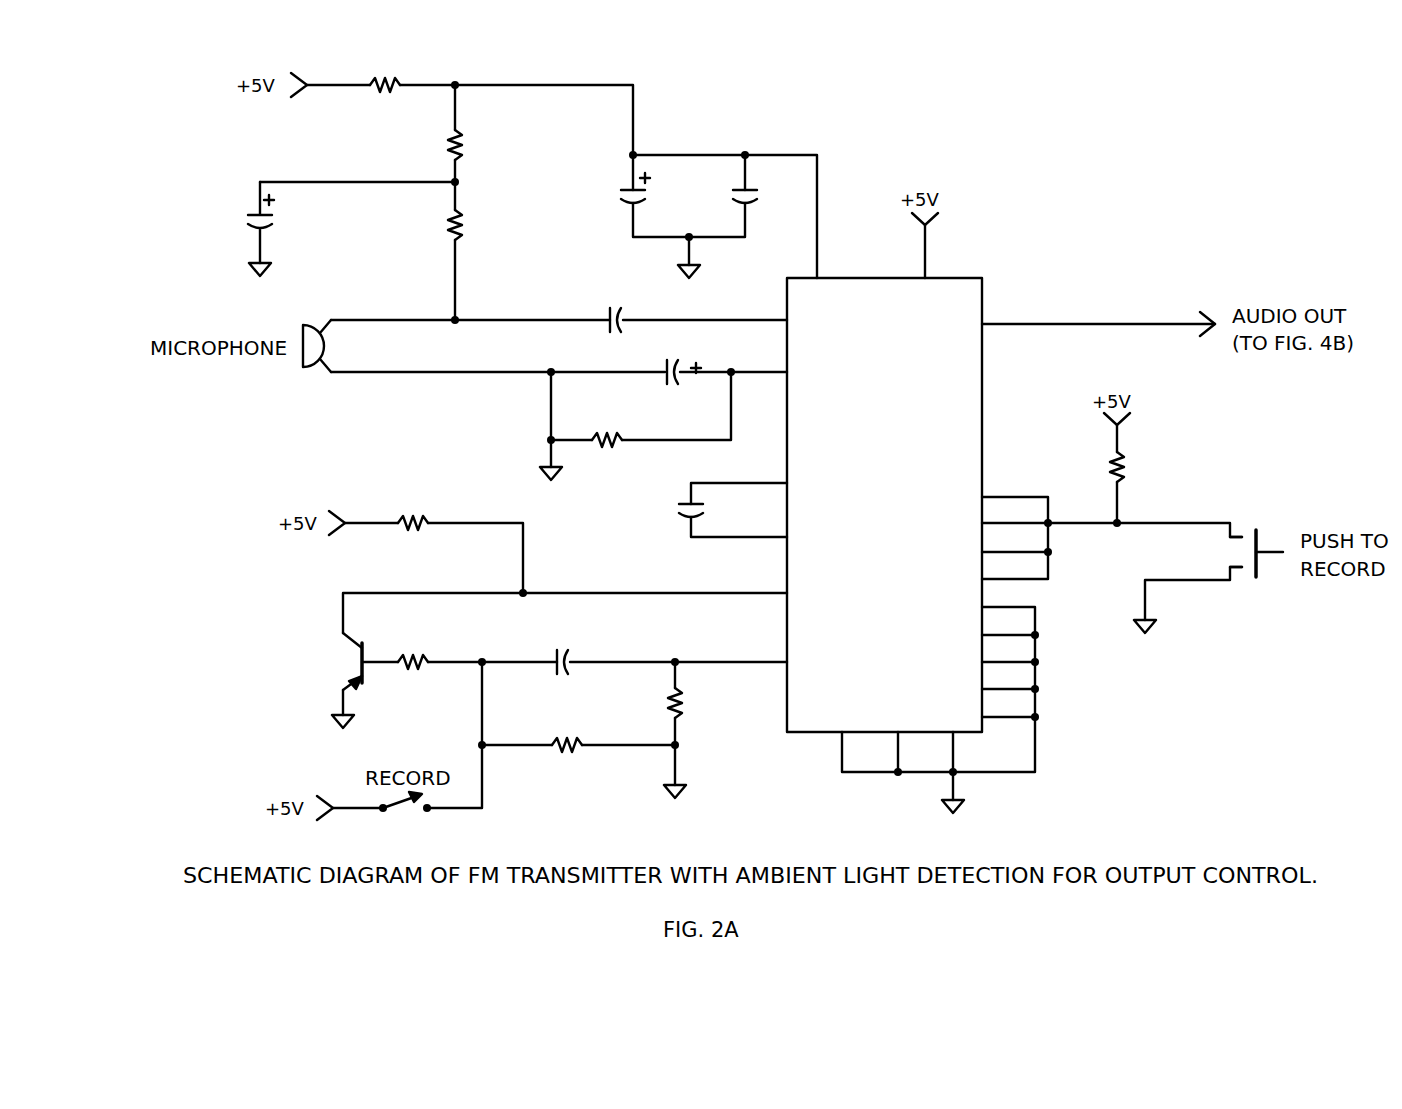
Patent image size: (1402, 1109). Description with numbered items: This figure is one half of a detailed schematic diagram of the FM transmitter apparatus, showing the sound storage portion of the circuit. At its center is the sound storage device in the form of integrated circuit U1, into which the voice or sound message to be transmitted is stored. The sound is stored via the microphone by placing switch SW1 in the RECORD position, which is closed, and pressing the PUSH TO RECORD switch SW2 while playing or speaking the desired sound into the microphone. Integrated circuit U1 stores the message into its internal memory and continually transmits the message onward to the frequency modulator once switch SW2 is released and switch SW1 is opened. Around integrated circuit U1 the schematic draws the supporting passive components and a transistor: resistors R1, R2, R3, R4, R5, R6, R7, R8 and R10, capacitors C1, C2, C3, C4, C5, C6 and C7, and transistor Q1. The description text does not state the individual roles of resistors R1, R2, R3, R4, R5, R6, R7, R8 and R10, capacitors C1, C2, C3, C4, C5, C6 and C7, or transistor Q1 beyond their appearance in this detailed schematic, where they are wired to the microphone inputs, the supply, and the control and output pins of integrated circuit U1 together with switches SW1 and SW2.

The resistor 33 ohm R1 is at (385, 82).
The resistor 2K R2 is at (478, 142).
The resistor 10K R3 is at (484, 221).
The resistor 300K R4 is at (608, 440).
The resistor 47K R5 is at (410, 522).
The resistor 47K R6 is at (410, 662).
The resistor 47K R7 is at (565, 746).
The resistor 220K R8 is at (708, 704).
The resistor 47K R10 is at (1144, 466).
The capacitor 10uF 10V C1 is at (248, 222).
The capacitor 10uF 10V C2 is at (622, 196).
The capacitor 0.1 C3 is at (765, 192).
The capacitor 0.027 C4 is at (609, 317).
The capacitor 10uF 10V C5 is at (676, 381).
The capacitor 0.1 C6 is at (670, 510).
The capacitor 0.1 C7 is at (567, 663).
The integrated circuit U1 is at (879, 509).
The transistor PN2222A Q1 is at (290, 662).
The switch SW1 is at (403, 816).
The PUSH TO RECORD switch SW2 is at (1254, 571).